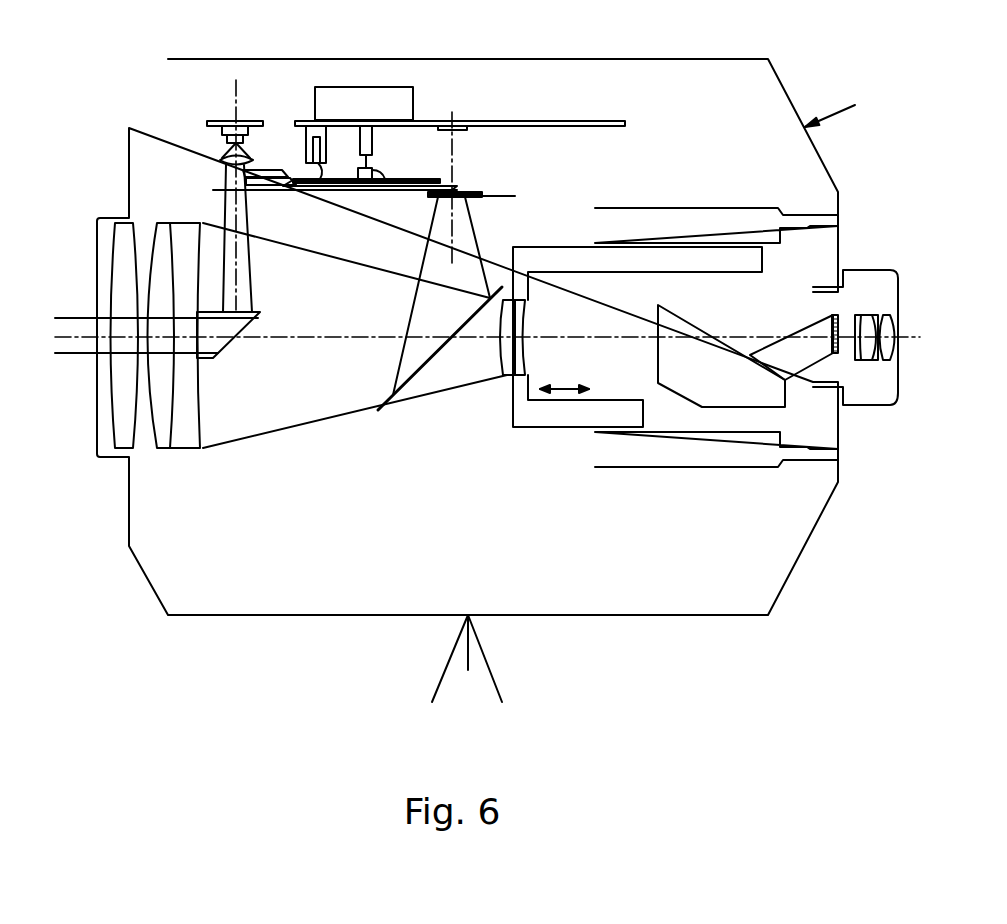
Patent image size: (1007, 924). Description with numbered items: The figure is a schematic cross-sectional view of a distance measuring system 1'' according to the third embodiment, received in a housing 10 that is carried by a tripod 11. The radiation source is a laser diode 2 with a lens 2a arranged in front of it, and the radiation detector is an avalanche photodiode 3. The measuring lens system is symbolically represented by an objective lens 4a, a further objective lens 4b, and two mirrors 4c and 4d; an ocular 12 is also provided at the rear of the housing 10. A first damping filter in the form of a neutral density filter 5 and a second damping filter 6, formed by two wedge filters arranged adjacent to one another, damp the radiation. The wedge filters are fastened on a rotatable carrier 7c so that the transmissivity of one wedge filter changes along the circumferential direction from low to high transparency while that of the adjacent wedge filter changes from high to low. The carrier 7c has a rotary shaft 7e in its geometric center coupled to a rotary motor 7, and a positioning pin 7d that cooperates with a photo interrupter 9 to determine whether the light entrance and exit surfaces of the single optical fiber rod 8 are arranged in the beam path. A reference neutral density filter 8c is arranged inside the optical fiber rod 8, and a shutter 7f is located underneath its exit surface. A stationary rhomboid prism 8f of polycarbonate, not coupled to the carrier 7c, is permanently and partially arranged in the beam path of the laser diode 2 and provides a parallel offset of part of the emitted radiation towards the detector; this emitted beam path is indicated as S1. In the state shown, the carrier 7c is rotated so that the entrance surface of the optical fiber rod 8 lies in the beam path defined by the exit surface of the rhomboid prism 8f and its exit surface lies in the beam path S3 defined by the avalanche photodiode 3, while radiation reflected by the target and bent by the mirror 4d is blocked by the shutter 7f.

The distance measuring system 1'' is at (845, 106).
The laser diode 2 is at (240, 119).
The lens 2a is at (222, 158).
The avalanche photodiode 3 is at (455, 121).
The objective lens 4a is at (108, 253).
The objective lens 4b is at (186, 450).
The mirror 4c is at (232, 338).
The mirror 4d is at (423, 367).
The neutral density filter 5 is at (213, 190).
The second damping filter 6 is at (483, 198).
The rotary motor 7 is at (360, 87).
The carrier 7c is at (392, 179).
The positioning pin 7d is at (316, 186).
The rotary shaft 7e is at (384, 186).
The shutter 7f is at (492, 196).
The optical fiber rod 8 is at (413, 187).
The reference neutral density filter 8c is at (350, 186).
The rhomboid prism 8f is at (268, 170).
The photo interrupter 9 is at (327, 135).
The housing 10 is at (806, 546).
The tripod 11 is at (485, 653).
The ocular 12 is at (890, 330).
The first beam path S1 is at (238, 286).
The third beam path S3 is at (334, 186).